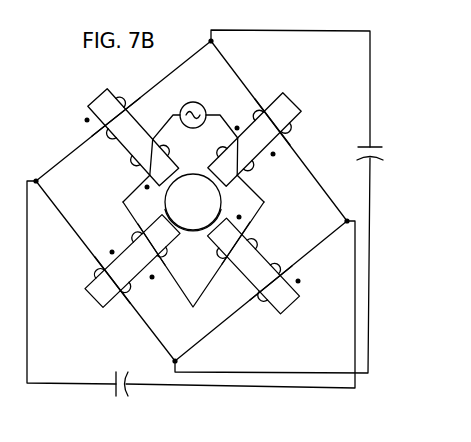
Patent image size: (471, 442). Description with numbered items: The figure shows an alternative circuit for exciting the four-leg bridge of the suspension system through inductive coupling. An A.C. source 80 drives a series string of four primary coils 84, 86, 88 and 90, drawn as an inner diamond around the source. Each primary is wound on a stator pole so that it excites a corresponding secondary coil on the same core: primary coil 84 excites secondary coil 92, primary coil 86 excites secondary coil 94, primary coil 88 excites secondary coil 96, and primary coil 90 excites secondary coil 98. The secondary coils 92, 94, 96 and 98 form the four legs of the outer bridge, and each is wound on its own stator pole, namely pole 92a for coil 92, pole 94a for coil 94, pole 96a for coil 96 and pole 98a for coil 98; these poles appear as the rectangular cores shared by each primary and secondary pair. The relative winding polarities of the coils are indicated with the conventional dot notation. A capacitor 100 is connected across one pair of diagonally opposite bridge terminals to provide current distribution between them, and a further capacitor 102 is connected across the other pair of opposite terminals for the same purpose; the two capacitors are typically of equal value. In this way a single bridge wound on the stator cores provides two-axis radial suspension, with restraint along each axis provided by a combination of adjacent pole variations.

The source 80 is at (198, 101).
The primary coil 84 is at (261, 171).
The primary coil 86 is at (258, 235).
The primary coil 88 is at (132, 232).
The primary coil 90 is at (132, 168).
The secondary coil 92 is at (290, 104).
The stator pole 92a is at (276, 90).
The secondary coil 94 is at (288, 307).
The stator pole 94a is at (273, 312).
The secondary coil 96 is at (97, 305).
The stator pole 96a is at (107, 309).
The secondary coil 98 is at (97, 100).
The stator pole 98a is at (112, 90).
The capacitor 100 is at (115, 374).
The capacitor 102 is at (364, 142).